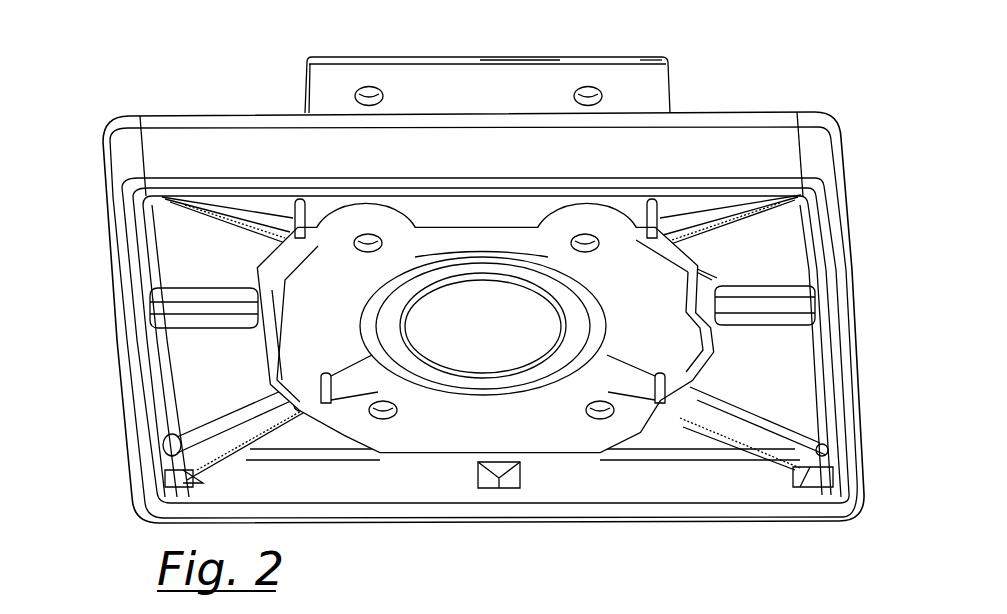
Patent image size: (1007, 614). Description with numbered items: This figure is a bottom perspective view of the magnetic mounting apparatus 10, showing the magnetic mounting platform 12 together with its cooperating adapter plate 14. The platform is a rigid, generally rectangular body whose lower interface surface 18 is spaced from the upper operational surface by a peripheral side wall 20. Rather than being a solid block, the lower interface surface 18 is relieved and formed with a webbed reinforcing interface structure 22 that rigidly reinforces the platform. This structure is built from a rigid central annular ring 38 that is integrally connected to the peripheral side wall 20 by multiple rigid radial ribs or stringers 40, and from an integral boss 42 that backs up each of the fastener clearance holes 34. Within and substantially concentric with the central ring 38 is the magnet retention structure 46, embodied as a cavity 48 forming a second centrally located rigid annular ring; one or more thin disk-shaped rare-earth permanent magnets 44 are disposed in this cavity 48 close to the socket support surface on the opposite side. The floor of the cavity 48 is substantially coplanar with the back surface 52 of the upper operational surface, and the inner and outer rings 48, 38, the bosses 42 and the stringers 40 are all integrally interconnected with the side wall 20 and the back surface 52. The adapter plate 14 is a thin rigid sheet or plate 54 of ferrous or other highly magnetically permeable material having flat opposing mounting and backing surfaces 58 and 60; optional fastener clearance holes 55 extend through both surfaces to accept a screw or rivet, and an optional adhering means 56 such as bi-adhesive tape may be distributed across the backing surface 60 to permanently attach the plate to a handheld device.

The magnetic mounting apparatus 10 is at (821, 78).
The magnetic mounting platform 12 is at (843, 175).
The adapter plate 14 is at (668, 72).
The lower interface surface 18 is at (630, 549).
The peripheral side wall 20 is at (852, 350).
The webbed reinforcing interface structure 22 is at (770, 278).
The fastener clearance holes 34 is at (369, 234).
The rigid central annular ring 38 is at (282, 358).
The radial ribs or stringers 40 is at (193, 295).
The boss 42 is at (412, 218).
The permanent magnets 44 is at (497, 334).
The magnet retention structure 46 is at (642, 327).
The cavity 48 is at (358, 322).
The back surface 52 is at (654, 304).
The sheet or plate 54 is at (305, 90).
The fastener clearance holes 55 is at (369, 87).
The adhering means 56 is at (468, 58).
The mounting surface 58 is at (528, 88).
The backing surface 60 is at (652, 58).